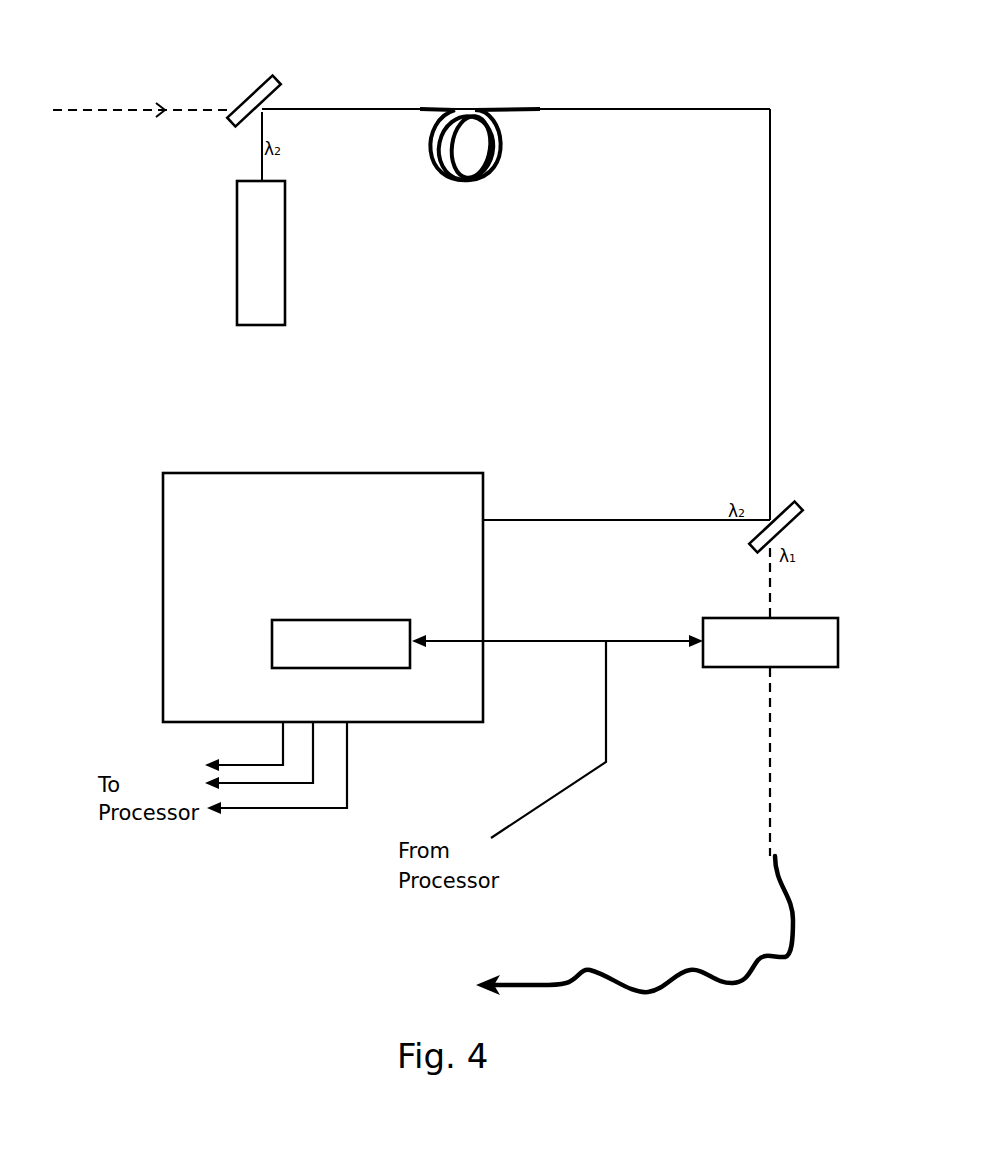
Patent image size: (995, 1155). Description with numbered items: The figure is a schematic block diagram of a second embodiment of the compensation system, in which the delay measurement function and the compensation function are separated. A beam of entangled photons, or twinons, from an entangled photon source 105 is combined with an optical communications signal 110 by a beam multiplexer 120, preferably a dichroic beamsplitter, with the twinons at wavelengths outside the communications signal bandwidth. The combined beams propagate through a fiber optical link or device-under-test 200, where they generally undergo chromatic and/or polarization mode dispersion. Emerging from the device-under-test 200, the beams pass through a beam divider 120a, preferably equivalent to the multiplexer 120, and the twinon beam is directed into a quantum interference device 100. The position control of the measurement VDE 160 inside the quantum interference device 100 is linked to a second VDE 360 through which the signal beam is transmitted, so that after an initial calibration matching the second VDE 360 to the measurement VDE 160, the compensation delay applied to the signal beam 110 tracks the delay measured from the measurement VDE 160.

The quantum interference device 100 is at (347, 472).
The entangled photon source 105 is at (235, 235).
The optical communications signal 110 is at (125, 100).
The beam multiplexer 120 is at (305, 69).
The beam divider 120a is at (795, 498).
The measurement VDE 160 is at (312, 642).
The device-under-test 200 is at (505, 111).
The second VDE 360 is at (742, 637).